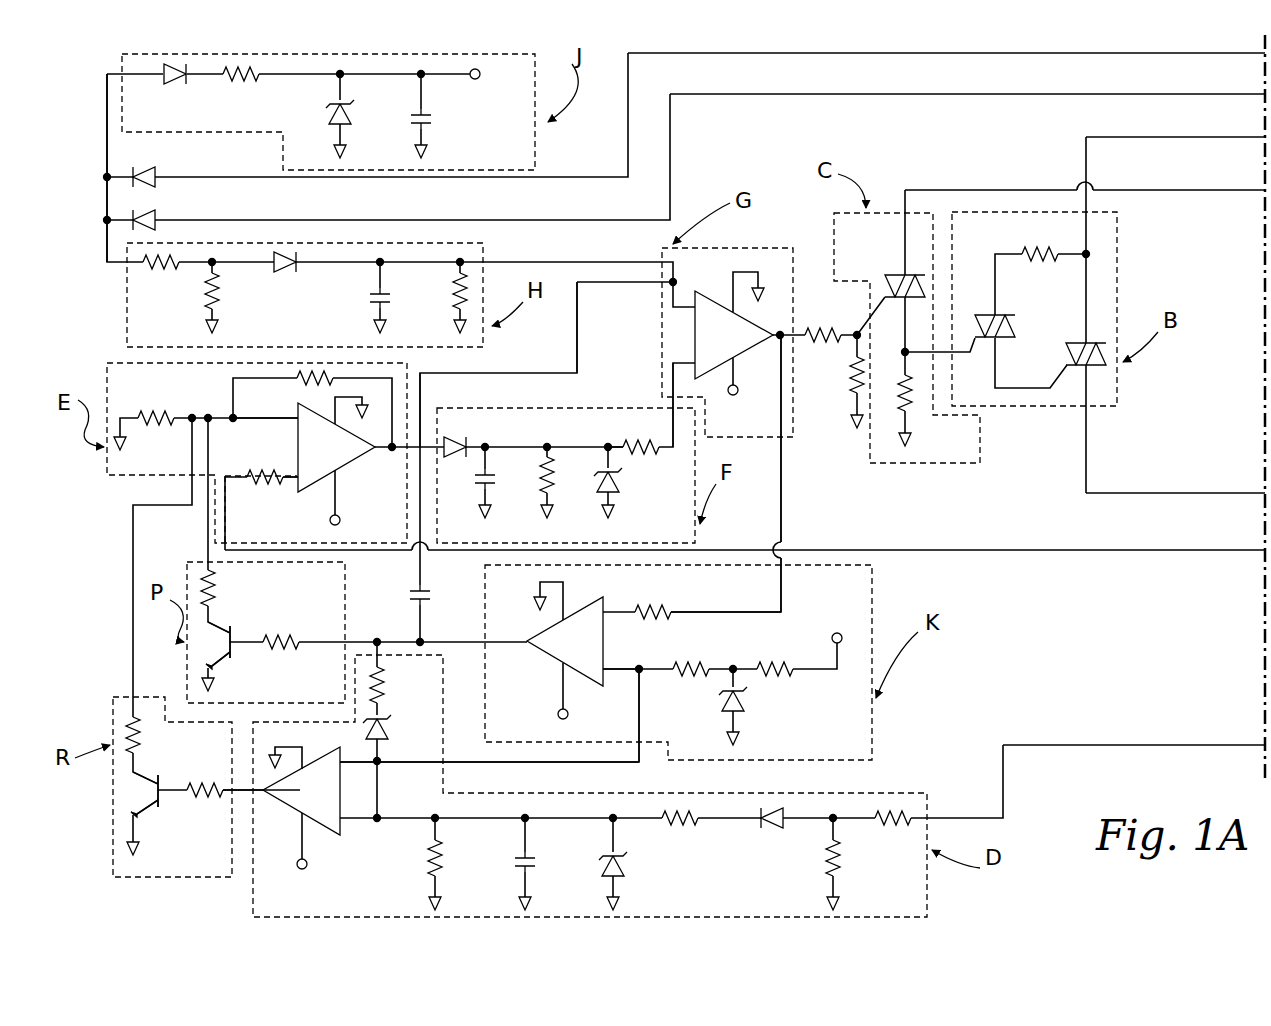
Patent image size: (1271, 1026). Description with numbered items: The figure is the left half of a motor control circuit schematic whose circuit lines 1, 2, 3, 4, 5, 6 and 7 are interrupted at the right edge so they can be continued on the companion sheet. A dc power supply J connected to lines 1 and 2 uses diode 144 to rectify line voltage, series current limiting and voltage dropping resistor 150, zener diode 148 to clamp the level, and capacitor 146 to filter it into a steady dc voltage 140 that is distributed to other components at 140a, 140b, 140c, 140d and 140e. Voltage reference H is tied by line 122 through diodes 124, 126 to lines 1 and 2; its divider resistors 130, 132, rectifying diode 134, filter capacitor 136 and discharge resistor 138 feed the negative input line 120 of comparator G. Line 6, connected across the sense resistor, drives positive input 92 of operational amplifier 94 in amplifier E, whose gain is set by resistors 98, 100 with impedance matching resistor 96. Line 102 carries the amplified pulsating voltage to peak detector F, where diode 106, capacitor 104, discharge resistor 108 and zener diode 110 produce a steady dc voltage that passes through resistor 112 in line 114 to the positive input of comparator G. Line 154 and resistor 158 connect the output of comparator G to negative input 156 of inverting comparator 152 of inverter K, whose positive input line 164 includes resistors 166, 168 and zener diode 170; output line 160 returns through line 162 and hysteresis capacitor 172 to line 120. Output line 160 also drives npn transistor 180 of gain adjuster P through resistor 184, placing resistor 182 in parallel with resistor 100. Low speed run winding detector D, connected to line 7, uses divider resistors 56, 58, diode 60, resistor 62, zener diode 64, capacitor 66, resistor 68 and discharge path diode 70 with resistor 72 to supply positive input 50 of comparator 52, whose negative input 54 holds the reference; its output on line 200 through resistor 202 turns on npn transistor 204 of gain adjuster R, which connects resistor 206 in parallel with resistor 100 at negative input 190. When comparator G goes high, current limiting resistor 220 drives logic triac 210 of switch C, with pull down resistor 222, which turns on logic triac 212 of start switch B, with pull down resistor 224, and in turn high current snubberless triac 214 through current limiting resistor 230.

The circuit line 1 is at (1242, 58).
The circuit line 2 is at (1242, 100).
The circuit line 3 is at (1242, 143).
The circuit line 4 is at (1242, 196).
The circuit line 5 is at (1242, 499).
The circuit line 6 is at (1242, 556).
The circuit line 7 is at (1242, 751).
The positive input 50 is at (360, 828).
The comparator 52 is at (300, 815).
The negative input 54 is at (365, 765).
The resistor 56 is at (830, 862).
The resistor 58 is at (912, 826).
The diode 60 is at (785, 825).
The current limiting resistor 62 is at (678, 828).
The zener diode 64 is at (605, 860).
The capacitor 66 is at (520, 860).
The resistor 68 is at (430, 858).
The diode 70 is at (387, 732).
The resistor 72 is at (387, 685).
The positive input 92 is at (290, 485).
The operational amplifier 94 is at (345, 458).
The impedance matching resistor 96 is at (260, 485).
The resistor 98 is at (305, 382).
The resistor 100 is at (160, 410).
The line 102 is at (421, 440).
The capacitor 104 is at (487, 495).
The diode 106 is at (455, 436).
The resistor 108 is at (550, 500).
The zener diode 110 is at (610, 497).
The input impedance matching resistor 112 is at (630, 440).
The line 114 is at (673, 392).
The line 120 is at (673, 282).
The line 122 is at (107, 247).
The diode 124 is at (152, 176).
The diode 126 is at (150, 219).
The resistor 130 is at (160, 270).
The resistor 132 is at (218, 305).
The diode 134 is at (282, 270).
The capacitor 136 is at (375, 298).
The resistor 138 is at (455, 300).
The dc voltage 140 is at (478, 80).
The dc voltage connection 140a is at (341, 518).
The dc voltage connection 140b is at (303, 872).
The dc voltage connection 140c is at (733, 395).
The dc voltage connection 140d is at (555, 714).
The dc voltage connection 140e is at (843, 633).
The diode 144 is at (177, 88).
The capacitor 146 is at (428, 118).
The zener diode 148 is at (330, 114).
The resistor 150 is at (240, 88).
The inverting comparator 152 is at (605, 658).
The line 154 is at (781, 500).
The negative input 156 is at (617, 610).
The impedance matching resistor 158 is at (668, 610).
The output line 160 is at (478, 640).
The line 162 is at (578, 318).
The positive input line 164 is at (639, 690).
The current limiting resistor 166 is at (760, 665).
The impedance matching resistor 168 is at (688, 665).
The zener diode 170 is at (748, 705).
The capacitor 172 is at (412, 593).
The npn transistor 180 is at (233, 655).
The resistor 182 is at (215, 590).
The current limiting resistor 184 is at (278, 638).
The negative input 190 is at (280, 422).
The line 200 is at (243, 792).
The current limiting resistor 202 is at (222, 798).
The npn transistor 204 is at (165, 782).
The resistor 206 is at (145, 730).
The logic triac 210 is at (895, 272).
The logic triac 212 is at (1005, 312).
The high current snubberless triac 214 is at (1072, 358).
The current limiting resistor 220 is at (810, 328).
The pull down resistor 222 is at (855, 380).
The pull down resistor 224 is at (908, 410).
The current limiting resistor 230 is at (1050, 248).